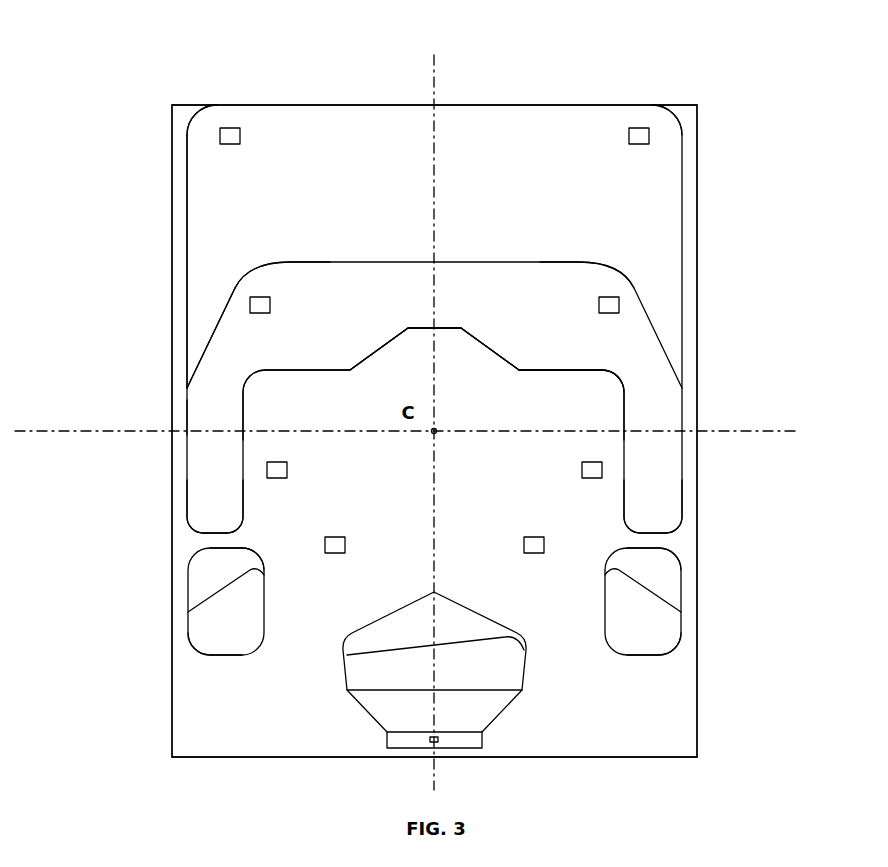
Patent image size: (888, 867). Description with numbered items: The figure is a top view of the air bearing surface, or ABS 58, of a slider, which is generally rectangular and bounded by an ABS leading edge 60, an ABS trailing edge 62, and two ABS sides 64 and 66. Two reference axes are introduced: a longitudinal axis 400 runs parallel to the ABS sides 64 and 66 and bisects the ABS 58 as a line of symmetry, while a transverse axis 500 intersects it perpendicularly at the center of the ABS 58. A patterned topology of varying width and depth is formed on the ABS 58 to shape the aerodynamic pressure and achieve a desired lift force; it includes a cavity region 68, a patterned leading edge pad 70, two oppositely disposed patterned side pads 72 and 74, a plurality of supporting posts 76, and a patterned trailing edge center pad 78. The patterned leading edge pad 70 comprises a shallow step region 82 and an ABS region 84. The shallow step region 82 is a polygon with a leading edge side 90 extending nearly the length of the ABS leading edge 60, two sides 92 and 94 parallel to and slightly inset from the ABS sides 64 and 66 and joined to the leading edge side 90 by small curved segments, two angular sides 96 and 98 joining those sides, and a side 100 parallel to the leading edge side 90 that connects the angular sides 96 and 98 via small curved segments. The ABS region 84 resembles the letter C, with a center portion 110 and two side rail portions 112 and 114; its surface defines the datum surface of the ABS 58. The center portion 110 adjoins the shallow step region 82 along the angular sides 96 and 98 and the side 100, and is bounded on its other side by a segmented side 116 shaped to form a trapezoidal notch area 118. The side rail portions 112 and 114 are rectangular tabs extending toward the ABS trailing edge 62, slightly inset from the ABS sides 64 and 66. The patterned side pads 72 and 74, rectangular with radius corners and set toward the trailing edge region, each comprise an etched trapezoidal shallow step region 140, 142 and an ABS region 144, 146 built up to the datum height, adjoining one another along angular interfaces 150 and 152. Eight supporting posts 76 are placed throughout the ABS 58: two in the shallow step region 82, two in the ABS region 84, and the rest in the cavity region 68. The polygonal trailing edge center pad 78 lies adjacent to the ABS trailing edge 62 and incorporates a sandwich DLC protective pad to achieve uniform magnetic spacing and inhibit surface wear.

The ABS 58 is at (220, 417).
The ABS leading edge 60 is at (522, 105).
The ABS trailing edge 62 is at (220, 757).
The ABS side 64 is at (172, 552).
The ABS side 66 is at (697, 548).
The cavity region 68 is at (355, 463).
The patterned leading edge pad 70 is at (197, 123).
The patterned side pad 72 is at (188, 618).
The patterned side pad 74 is at (681, 636).
The supporting posts 76 is at (228, 126).
The patterned trailing edge center pad 78 is at (507, 712).
The shallow step region 82 is at (305, 160).
The ABS region 84 is at (497, 277).
The leading edge side 90 is at (364, 105).
The side 92 is at (187, 247).
The side 94 is at (683, 150).
The angular side 96 is at (222, 318).
The angular side 98 is at (620, 278).
The side 100 is at (355, 262).
The center portion 110 is at (510, 352).
The side rail portion 112 is at (195, 507).
The side rail portion 114 is at (670, 478).
The segmented side 116 is at (567, 368).
The trapezoidal notch area 118 is at (427, 328).
The shallow step region 140 is at (220, 562).
The shallow step region 142 is at (630, 558).
The ABS region 144 is at (225, 645).
The ABS region 146 is at (645, 645).
The angular interface 150 is at (230, 584).
The angular interface 152 is at (638, 584).
The longitudinal axis 400 is at (416, 41).
The transverse axis 500 is at (442, 432).